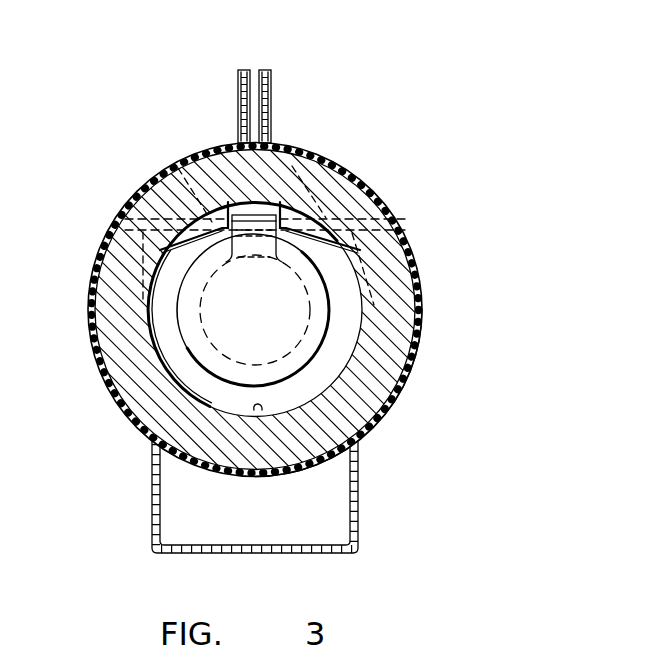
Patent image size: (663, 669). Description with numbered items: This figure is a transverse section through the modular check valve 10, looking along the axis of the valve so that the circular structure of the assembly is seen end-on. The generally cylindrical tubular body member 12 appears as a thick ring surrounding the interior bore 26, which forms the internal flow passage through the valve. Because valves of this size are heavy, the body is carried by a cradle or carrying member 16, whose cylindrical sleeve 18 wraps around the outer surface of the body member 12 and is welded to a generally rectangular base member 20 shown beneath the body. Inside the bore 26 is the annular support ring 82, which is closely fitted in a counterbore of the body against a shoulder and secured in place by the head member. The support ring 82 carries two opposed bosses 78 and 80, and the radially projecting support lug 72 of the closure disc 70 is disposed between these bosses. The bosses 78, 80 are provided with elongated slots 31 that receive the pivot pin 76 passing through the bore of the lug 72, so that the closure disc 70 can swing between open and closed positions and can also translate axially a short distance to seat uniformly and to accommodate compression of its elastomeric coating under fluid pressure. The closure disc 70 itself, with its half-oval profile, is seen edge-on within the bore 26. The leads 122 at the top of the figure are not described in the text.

The check valve 10 is at (397, 156).
The body member 12 is at (394, 271).
The carrying member 16 is at (388, 199).
The cylindrical sleeve 18 is at (394, 398).
The base member 20 is at (359, 493).
The interior bore 26 is at (262, 410).
The elongated slots 31 is at (188, 157).
The closure disc 70 is at (306, 311).
The support lug 72 is at (248, 213).
The pivot pin 76 is at (174, 173).
The boss 78 is at (184, 243).
The boss 80 is at (305, 246).
The support ring 82 is at (143, 290).
The electrical leads 122 is at (247, 70).